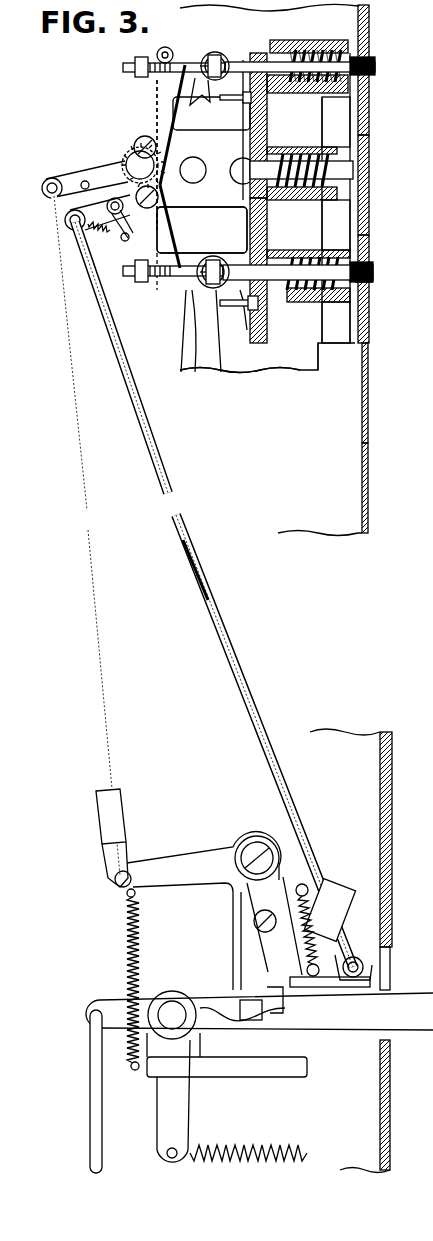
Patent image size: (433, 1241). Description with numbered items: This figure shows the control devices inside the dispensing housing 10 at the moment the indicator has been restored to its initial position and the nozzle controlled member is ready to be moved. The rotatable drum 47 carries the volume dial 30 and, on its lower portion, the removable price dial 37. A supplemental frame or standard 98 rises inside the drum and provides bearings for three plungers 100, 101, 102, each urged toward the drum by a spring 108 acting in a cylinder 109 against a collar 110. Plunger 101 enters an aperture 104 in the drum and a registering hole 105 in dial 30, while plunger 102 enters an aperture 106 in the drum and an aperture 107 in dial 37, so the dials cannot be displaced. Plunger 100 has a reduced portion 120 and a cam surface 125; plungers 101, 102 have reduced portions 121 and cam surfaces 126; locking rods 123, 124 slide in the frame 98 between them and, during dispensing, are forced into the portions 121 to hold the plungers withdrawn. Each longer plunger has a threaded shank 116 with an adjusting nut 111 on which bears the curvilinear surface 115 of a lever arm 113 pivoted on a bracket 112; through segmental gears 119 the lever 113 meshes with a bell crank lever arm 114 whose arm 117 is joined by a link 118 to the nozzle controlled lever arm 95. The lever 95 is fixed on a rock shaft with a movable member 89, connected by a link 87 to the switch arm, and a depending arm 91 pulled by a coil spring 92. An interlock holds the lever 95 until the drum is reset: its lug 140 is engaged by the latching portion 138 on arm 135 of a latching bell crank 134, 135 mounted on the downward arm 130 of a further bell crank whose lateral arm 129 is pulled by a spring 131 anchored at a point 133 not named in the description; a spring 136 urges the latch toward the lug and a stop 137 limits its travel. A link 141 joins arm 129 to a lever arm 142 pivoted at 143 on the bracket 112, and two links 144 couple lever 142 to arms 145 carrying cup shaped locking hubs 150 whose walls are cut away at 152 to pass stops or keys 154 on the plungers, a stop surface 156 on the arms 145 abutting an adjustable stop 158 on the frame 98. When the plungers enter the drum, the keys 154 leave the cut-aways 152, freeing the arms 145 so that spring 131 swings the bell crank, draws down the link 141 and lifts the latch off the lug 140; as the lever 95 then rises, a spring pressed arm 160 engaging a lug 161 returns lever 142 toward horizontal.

The housing 10 is at (392, 781).
The dial 30 is at (369, 213).
The removable dial 37 is at (362, 440).
The drum 47 is at (336, 348).
The link 87 is at (90, 1067).
The movable member 89 is at (110, 998).
The depending arm 91 is at (180, 1115).
The tension member 92 is at (250, 1150).
The lever arm 95 is at (398, 995).
The supplemental frame 98 is at (228, 372).
The plunger 100 is at (353, 168).
The plunger 101 is at (375, 66).
The plunger 102 is at (373, 270).
The aperture 104 is at (369, 32).
The hole 105 is at (369, 85).
The aperture 106 is at (369, 316).
The aperture 107 is at (373, 285).
The springs 108 is at (315, 45).
The cylinders 109 is at (330, 250).
The collar 110 is at (328, 95).
The adjusting nut 111 is at (138, 77).
The bracket 112 is at (214, 212).
The lever arm 113 is at (160, 108).
The lever arm 114 is at (150, 222).
The curvilinear bearing surface 115 is at (185, 42).
The shank 116 is at (123, 67).
The arm 117 is at (82, 228).
The link 118 is at (168, 475).
The segmental gear 119 is at (135, 152).
The portion of reduced diameter 120 is at (250, 170).
The portions of reduced diameter 121 is at (303, 45).
The locking rod 123 is at (262, 111).
The locking rod 124 is at (262, 225).
The cam surface 125 is at (275, 150).
The cam surfaces 126 is at (270, 52).
The arm 129 is at (160, 185).
The arm 130 is at (265, 893).
The spring 131 is at (126, 920).
The spring anchor 133 is at (134, 1072).
The arm 134 is at (275, 905).
The arm 135 is at (275, 968).
The spring 136 is at (308, 918).
The stop 137 is at (283, 935).
The latching portion 138 is at (268, 1022).
The lug 140 is at (240, 1060).
The link 141 is at (112, 724).
The lever arm 142 is at (90, 168).
The pivot 143 is at (140, 165).
The links 144 is at (157, 85).
The rocking members 145 is at (180, 58).
The locking cup 150 is at (224, 54).
The cut-away portion 152 is at (214, 52).
The stop 154 is at (228, 60).
The stop surface 156 is at (200, 100).
The adjustable stop 158 is at (226, 101).
The spring pressed arm 160 is at (112, 198).
The lug 161 is at (55, 178).